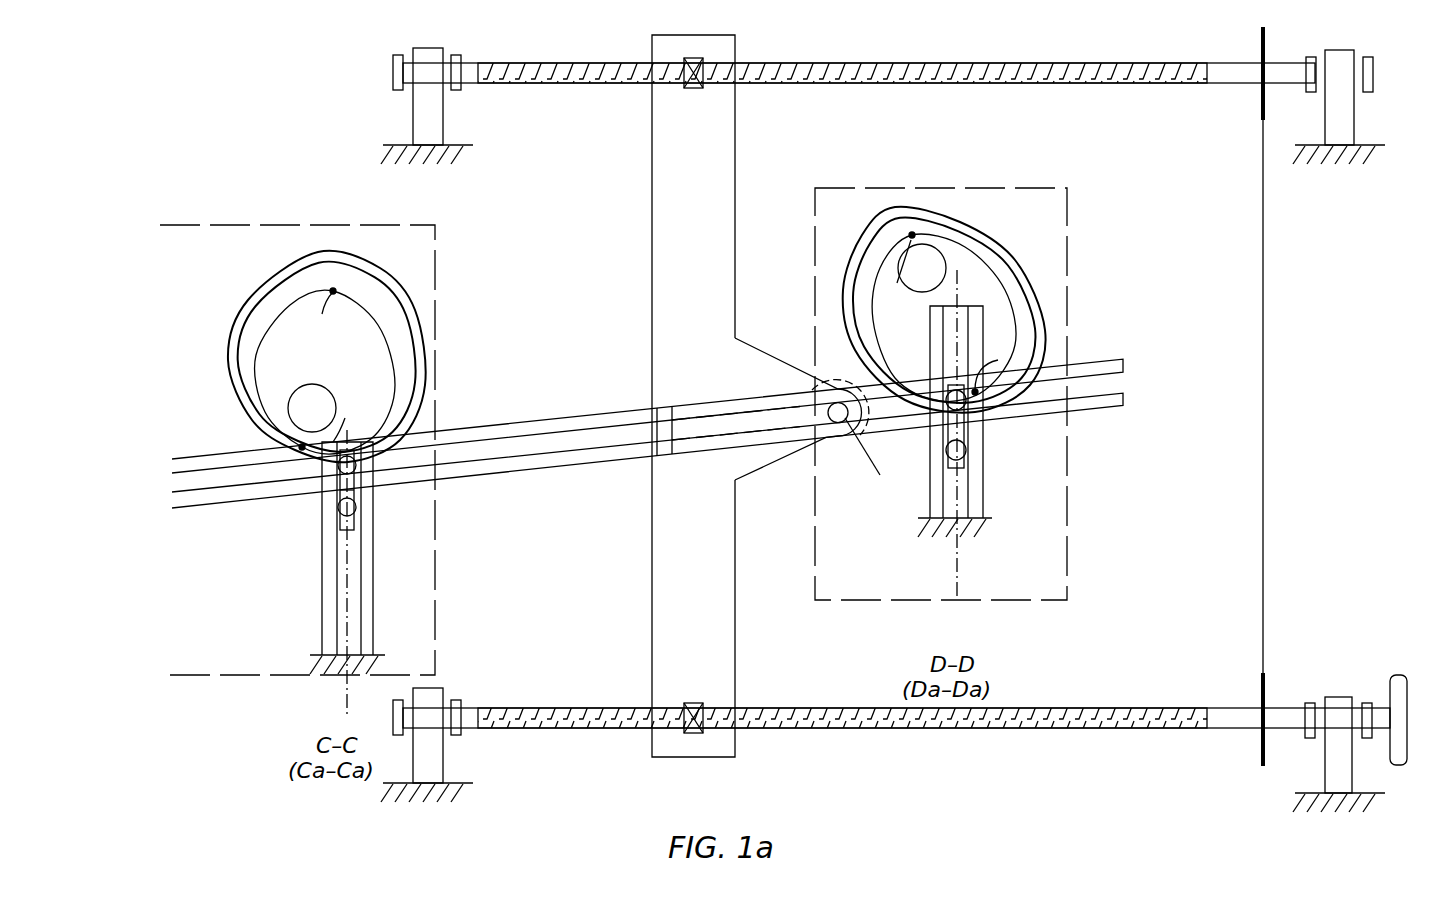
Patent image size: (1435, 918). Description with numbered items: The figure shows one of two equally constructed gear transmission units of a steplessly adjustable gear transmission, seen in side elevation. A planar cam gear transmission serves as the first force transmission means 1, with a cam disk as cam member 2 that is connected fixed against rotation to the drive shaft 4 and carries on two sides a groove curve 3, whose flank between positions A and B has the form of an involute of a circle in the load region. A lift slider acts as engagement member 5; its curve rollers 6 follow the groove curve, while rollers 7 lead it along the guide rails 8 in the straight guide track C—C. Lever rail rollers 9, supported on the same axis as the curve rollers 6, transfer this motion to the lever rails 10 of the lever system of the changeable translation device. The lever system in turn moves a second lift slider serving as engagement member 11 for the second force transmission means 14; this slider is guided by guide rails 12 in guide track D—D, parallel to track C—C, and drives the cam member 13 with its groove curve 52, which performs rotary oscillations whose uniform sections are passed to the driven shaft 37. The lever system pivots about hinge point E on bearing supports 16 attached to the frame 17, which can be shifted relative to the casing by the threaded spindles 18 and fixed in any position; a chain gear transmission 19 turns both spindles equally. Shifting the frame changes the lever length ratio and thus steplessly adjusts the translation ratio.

The first force transmission means 1 is at (440, 280).
The cam member 2 is at (338, 254).
The groove curve 3 is at (372, 300).
The drive shaft 4 is at (297, 405).
The engagement member 5 is at (352, 497).
The curve rollers 6 is at (352, 447).
The rollers 7 is at (340, 515).
The guide rails 8 is at (330, 645).
The lever rail rollers 9 is at (347, 548).
The lever rails 10 is at (552, 421).
The engagement member 11 is at (960, 432).
The guide rails 12 is at (935, 502).
The cam member 13 is at (1010, 245).
The second force transmission means 14 is at (1070, 220).
The bearing supports 16 is at (777, 470).
The frame 17 is at (665, 262).
The threaded spindles 18 is at (823, 90).
The chain gear transmission 19 is at (1262, 112).
The driven shaft 37 is at (927, 268).
The groove curve 52 is at (912, 235).